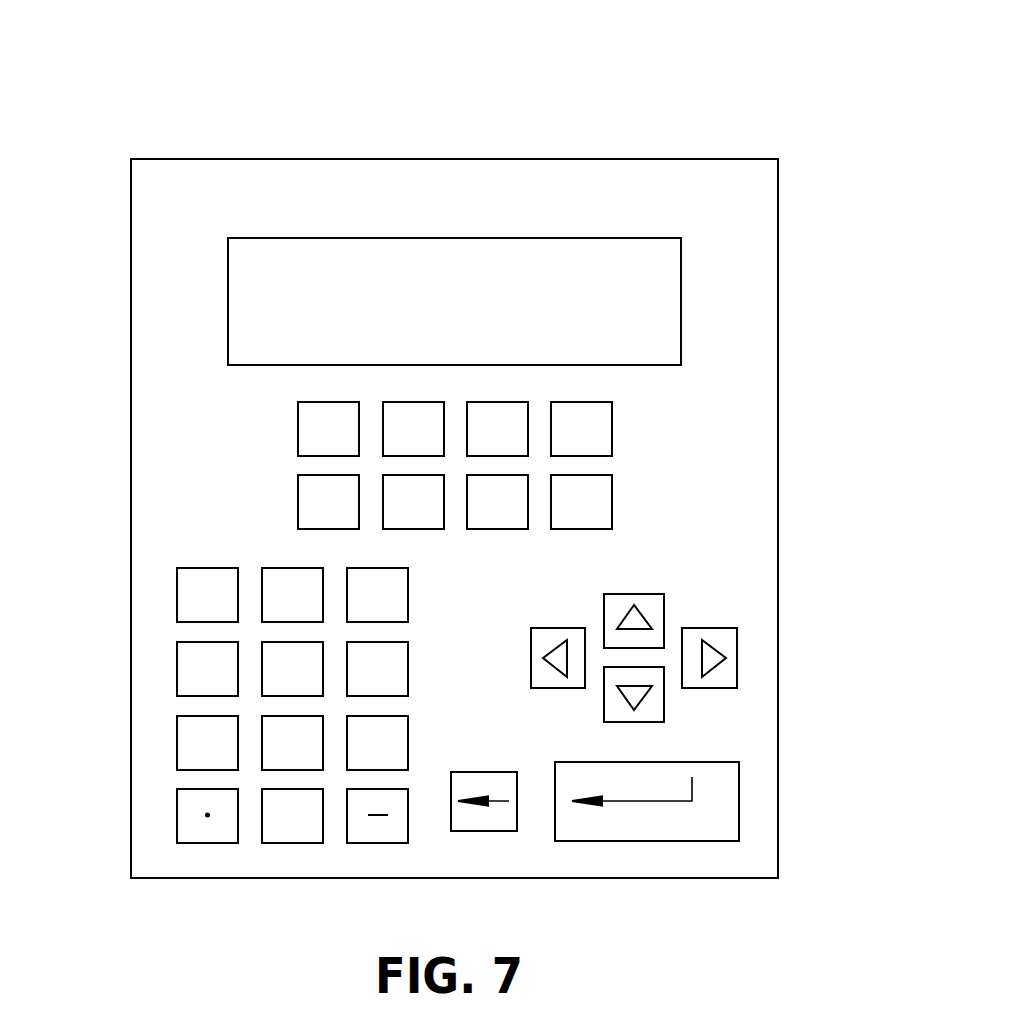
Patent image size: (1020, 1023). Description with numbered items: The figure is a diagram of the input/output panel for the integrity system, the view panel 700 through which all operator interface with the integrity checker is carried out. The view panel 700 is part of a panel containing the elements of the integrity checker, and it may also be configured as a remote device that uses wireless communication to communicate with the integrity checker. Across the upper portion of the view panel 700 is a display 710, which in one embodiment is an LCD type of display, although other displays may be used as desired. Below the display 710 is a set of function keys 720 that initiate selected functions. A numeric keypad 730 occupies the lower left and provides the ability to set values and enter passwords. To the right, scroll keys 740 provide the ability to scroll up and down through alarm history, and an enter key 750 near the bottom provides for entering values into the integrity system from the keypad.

The view panel 700 is at (678, 98).
The display 710 is at (683, 299).
The function keys 720 is at (632, 439).
The numeric keypad 730 is at (162, 593).
The scroll keys 740 is at (695, 597).
The enter key 750 is at (740, 799).